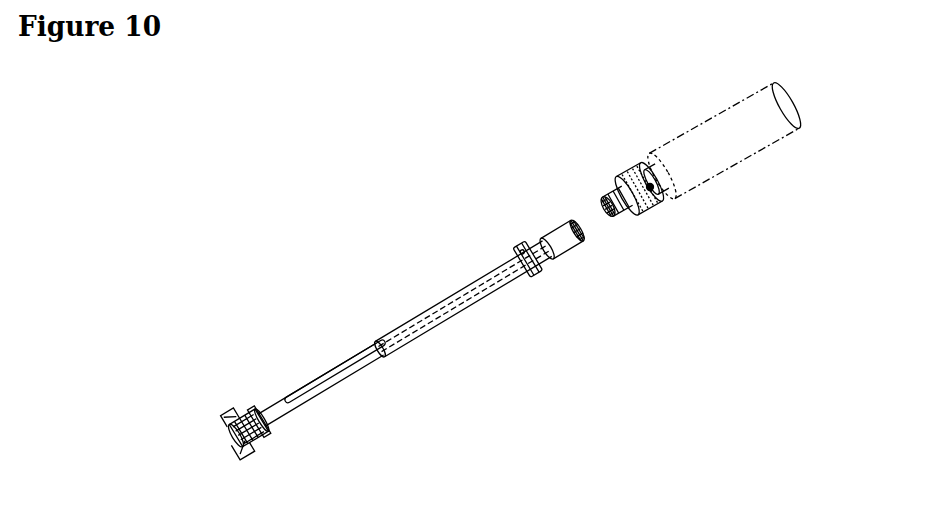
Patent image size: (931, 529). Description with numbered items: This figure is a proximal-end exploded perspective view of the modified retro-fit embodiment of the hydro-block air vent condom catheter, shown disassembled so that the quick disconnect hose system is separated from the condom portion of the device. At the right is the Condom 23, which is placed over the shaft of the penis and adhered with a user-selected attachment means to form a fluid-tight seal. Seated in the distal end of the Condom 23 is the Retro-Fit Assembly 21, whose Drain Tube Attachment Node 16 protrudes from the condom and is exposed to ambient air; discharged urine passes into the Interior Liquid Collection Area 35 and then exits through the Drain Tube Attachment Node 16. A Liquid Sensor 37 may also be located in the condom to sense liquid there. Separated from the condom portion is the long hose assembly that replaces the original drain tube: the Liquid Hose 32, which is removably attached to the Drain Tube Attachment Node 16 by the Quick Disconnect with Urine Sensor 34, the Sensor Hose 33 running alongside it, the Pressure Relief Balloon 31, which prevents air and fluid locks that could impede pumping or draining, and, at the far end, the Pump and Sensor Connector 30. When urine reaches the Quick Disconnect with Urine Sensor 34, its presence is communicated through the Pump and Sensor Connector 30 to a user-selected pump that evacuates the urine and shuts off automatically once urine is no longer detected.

The Retro-Fit Assembly Drain Tube Attachment Node 16 is at (615, 226).
The Retro-Fit Assembly 21 is at (645, 222).
The Condom 23 is at (695, 135).
The Pump and Sensor Connector 30 is at (223, 404).
The Pressure Relief Balloon 31 is at (331, 359).
The Liquid Hose 32 is at (445, 287).
The Sensor Hose 33 is at (494, 299).
The Quick Disconnect with Urine Sensor 34 is at (552, 216).
The Interior Liquid Collection Area 35 is at (631, 160).
The Liquid Sensor 37 is at (668, 193).